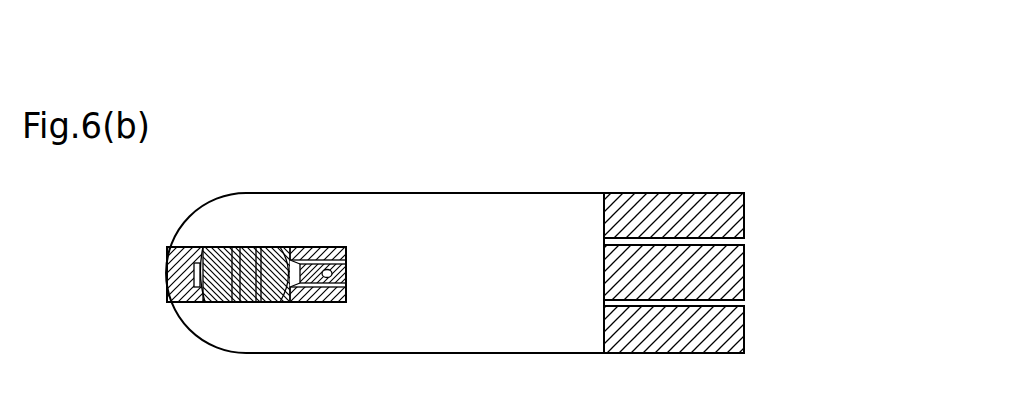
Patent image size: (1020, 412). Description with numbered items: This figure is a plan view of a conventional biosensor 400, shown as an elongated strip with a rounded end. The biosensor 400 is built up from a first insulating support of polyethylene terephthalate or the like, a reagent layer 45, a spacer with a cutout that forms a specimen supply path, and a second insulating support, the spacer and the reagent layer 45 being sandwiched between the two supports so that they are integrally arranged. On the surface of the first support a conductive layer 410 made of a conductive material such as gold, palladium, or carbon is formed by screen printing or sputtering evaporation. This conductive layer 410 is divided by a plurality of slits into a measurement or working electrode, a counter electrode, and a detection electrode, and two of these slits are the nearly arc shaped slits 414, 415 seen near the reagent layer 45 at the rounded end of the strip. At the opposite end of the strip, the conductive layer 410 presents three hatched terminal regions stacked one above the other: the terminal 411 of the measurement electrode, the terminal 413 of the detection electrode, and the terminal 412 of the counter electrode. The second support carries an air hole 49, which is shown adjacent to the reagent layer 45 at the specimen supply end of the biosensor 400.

The biosensor 400 is at (815, 163).
The conductive layer 410 is at (656, 205).
The terminal of the measurement electrode 411 is at (740, 222).
The terminal of the detection electrode 413 is at (740, 278).
The terminal of the counter electrode 412 is at (740, 333).
The reagent layer 45 is at (243, 249).
The nearly arc shaped slit 414 is at (196, 268).
The nearly arc shaped slit 415 is at (298, 302).
The air hole 49 is at (346, 279).